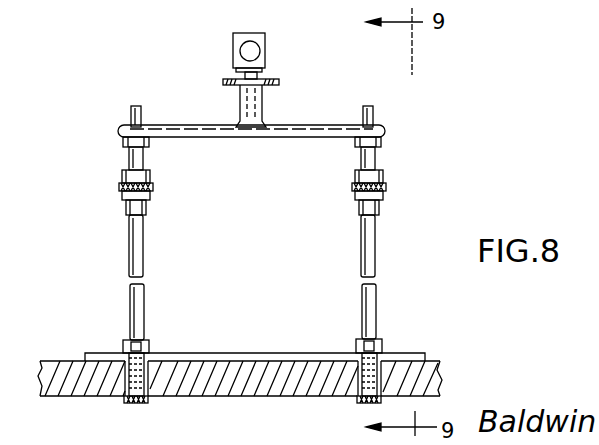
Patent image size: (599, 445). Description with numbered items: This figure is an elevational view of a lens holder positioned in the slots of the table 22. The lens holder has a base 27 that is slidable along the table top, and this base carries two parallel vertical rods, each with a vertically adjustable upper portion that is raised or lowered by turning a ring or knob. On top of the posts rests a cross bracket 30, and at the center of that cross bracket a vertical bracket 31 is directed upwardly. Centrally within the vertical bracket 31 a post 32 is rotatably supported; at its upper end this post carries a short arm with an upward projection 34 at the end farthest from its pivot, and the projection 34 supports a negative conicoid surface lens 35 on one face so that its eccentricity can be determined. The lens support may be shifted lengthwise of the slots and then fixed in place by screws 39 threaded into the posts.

The table 22 is at (93, 393).
The base 27 is at (403, 357).
The cross bracket 30 is at (313, 131).
The vertical bracket 31 is at (262, 110).
The post 32 is at (240, 98).
The upward projection 34 is at (263, 40).
The negative conicoid surface lens 35 is at (251, 51).
The screws 39 is at (145, 403).